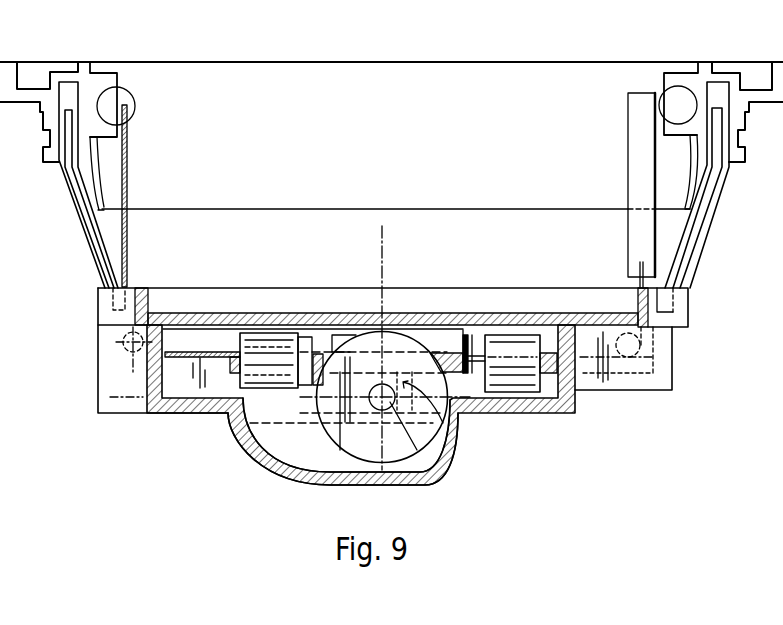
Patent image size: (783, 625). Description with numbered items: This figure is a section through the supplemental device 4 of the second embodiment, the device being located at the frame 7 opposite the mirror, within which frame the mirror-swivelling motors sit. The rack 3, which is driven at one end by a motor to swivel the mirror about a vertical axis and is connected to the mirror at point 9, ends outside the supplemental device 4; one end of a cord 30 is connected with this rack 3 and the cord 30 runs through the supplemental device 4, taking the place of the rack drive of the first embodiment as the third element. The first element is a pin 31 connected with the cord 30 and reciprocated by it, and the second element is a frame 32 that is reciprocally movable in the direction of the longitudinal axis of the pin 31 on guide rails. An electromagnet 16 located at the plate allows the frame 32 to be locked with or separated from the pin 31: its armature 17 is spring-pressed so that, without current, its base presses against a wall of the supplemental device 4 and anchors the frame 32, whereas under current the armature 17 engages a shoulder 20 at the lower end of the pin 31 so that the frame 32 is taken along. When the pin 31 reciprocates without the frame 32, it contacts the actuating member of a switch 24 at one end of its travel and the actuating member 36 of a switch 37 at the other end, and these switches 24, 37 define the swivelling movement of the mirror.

The rack 3 is at (638, 177).
The supplemental device 4 is at (250, 452).
The frame 7 is at (86, 232).
The point 9 is at (677, 104).
The electromagnet 16 is at (342, 435).
The armature 17 is at (440, 462).
The shoulder 20 is at (463, 430).
The switch 24 is at (262, 348).
The cord 30 is at (128, 172).
The pin 31 is at (443, 343).
The frame 32 is at (553, 350).
The actuating member 36 is at (472, 342).
The switch 37 is at (513, 347).